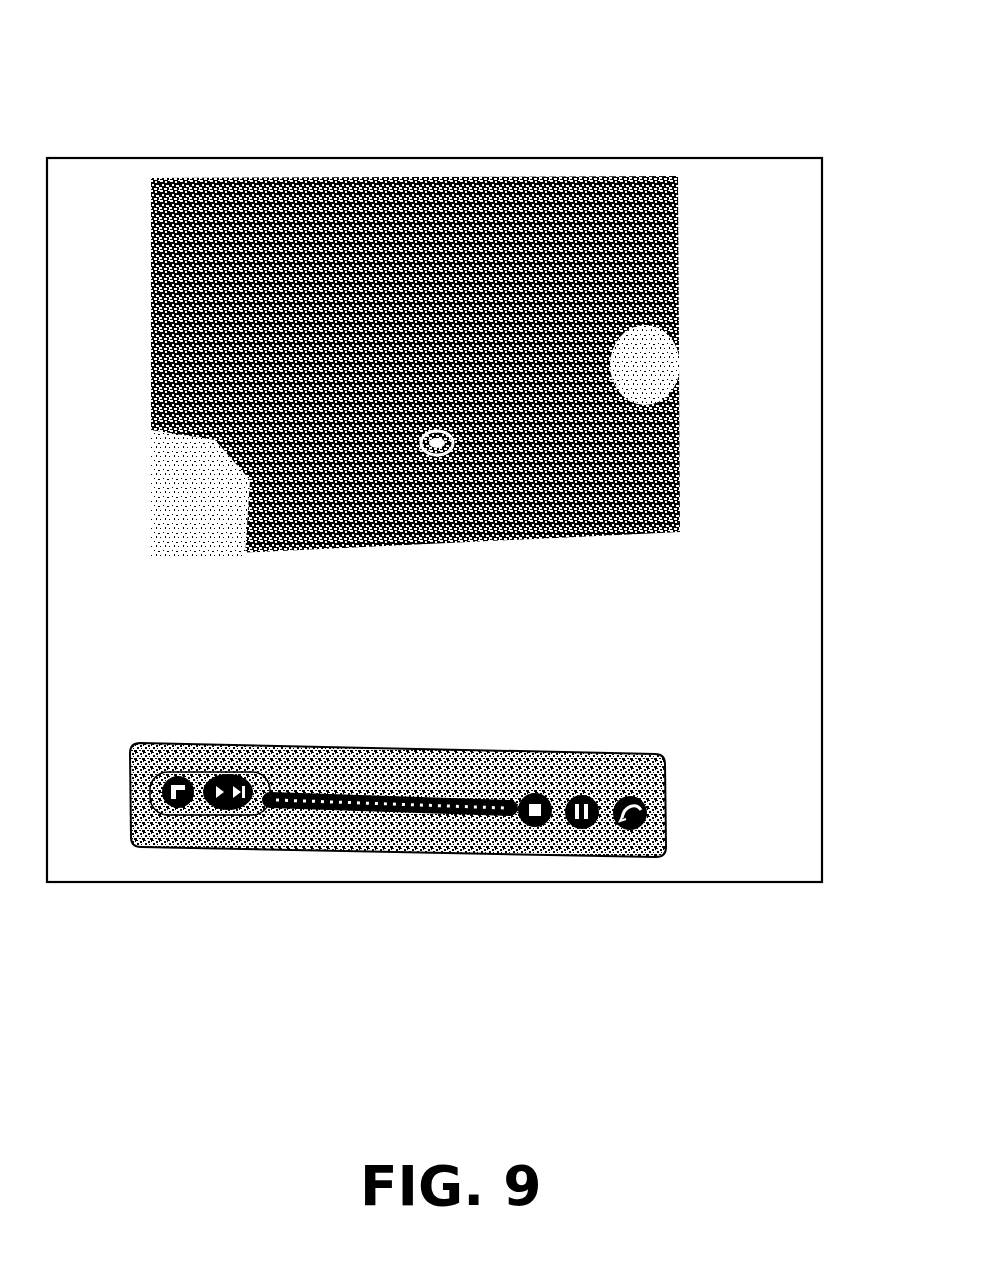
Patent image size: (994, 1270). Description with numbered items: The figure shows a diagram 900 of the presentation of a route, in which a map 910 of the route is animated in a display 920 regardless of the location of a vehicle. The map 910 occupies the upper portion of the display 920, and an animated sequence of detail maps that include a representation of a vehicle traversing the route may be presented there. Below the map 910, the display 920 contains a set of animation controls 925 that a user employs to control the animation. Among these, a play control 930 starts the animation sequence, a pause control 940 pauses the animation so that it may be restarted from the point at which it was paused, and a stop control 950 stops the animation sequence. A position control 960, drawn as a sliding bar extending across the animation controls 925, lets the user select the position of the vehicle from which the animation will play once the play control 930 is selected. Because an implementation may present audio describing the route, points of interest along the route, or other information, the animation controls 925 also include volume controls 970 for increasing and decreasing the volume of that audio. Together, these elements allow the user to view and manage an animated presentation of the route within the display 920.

The graphical user interface 900 is at (426, 25).
The map 910 is at (679, 288).
The display 920 is at (619, 159).
The animation controls 925 is at (439, 828).
The play control 930 is at (632, 830).
The pause control 940 is at (585, 830).
The stop control 950 is at (535, 830).
The position control 960 is at (305, 823).
The volume controls 970 is at (208, 850).